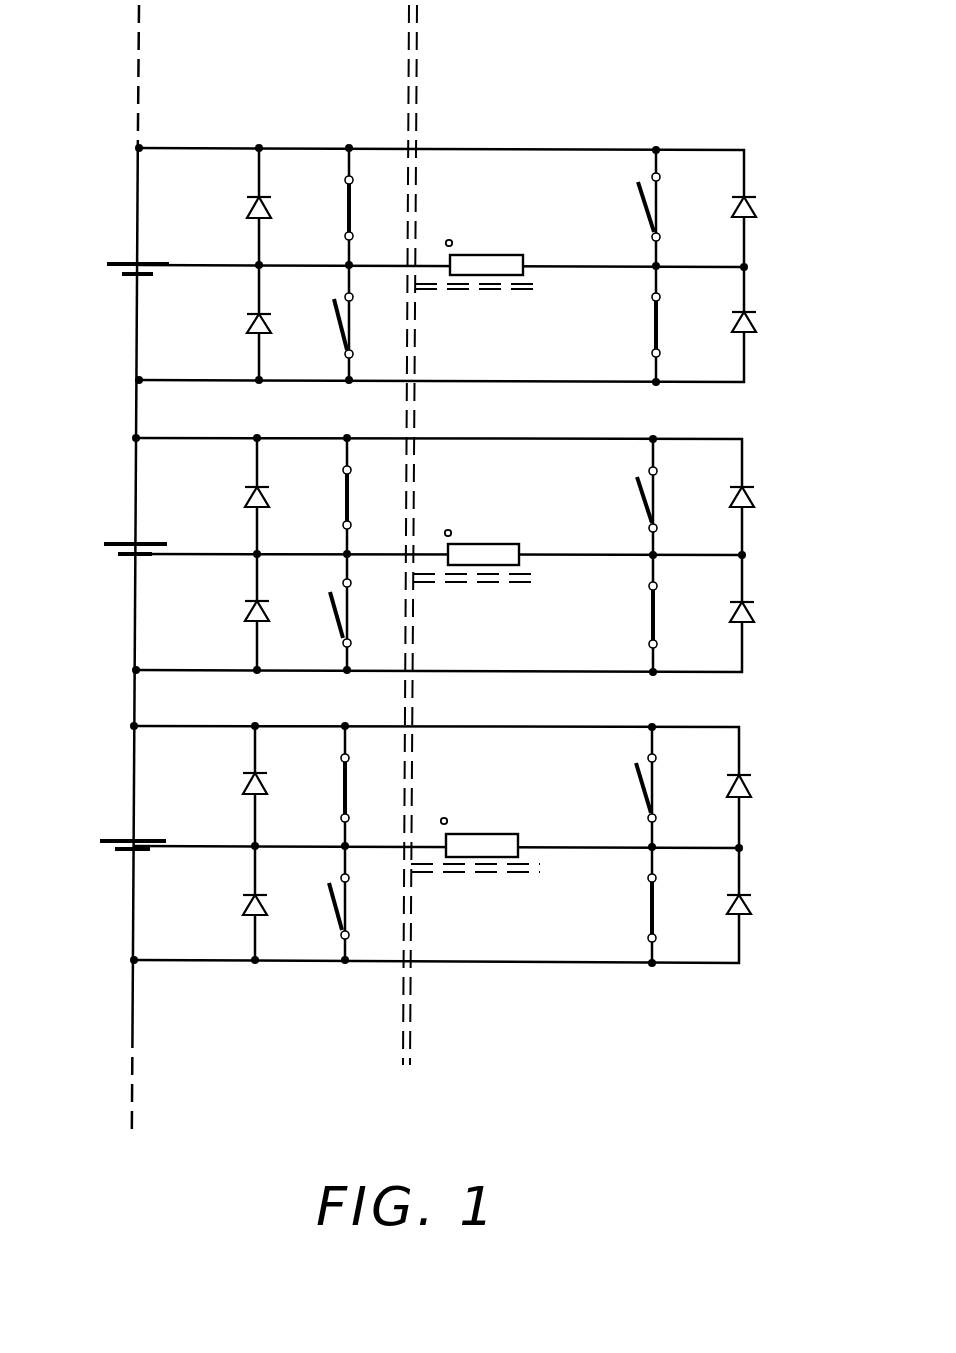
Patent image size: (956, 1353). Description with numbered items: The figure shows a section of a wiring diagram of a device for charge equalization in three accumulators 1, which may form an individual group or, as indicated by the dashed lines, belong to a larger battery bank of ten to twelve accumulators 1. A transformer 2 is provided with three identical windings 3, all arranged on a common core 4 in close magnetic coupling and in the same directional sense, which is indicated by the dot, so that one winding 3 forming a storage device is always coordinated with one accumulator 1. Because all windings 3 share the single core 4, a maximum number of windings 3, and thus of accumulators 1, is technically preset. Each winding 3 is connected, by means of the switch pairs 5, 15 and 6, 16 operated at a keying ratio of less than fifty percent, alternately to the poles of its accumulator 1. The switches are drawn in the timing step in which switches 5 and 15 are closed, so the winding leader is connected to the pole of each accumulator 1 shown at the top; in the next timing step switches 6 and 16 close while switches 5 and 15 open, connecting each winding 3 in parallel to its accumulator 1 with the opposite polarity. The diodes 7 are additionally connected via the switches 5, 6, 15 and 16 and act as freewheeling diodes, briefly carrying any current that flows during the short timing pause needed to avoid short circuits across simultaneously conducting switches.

The accumulator 1 is at (119, 263).
The transformer 2 is at (433, 220).
The winding 3 is at (490, 255).
The common core 4 is at (414, 362).
The switch 5 is at (349, 195).
The switch 6 is at (638, 196).
The diode 7 is at (756, 207).
The switch 15 is at (656, 320).
The switch 16 is at (336, 330).